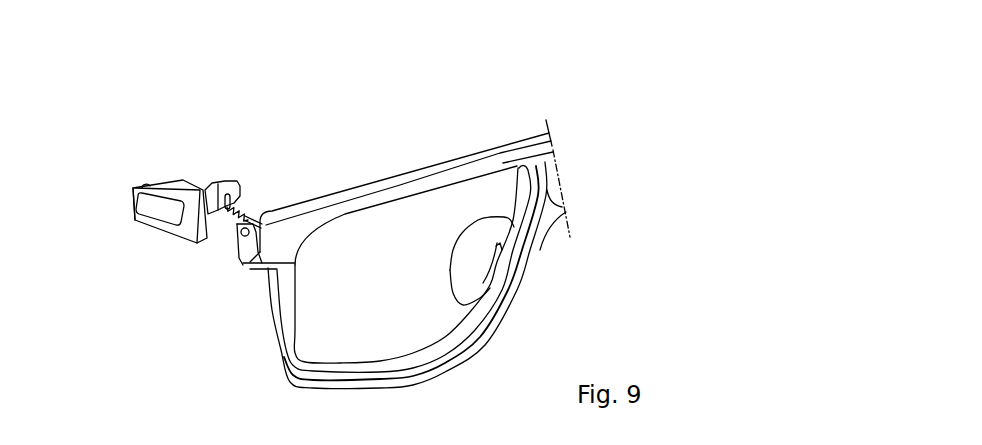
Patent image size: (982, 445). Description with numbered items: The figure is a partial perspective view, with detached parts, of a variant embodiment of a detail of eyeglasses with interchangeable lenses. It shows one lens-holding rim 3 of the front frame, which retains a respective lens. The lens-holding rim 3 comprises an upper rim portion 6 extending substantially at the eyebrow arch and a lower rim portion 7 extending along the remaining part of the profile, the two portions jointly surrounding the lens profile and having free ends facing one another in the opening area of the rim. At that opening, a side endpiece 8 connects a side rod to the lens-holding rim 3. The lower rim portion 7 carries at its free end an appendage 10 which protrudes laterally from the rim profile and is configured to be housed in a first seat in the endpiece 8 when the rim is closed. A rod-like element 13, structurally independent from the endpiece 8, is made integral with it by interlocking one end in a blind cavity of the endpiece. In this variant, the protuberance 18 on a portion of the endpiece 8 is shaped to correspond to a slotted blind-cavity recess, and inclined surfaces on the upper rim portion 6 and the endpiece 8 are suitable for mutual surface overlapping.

The lens-holding rim 3 is at (473, 148).
The upper rim portion 6 is at (320, 217).
The lower rim portion 7 is at (288, 350).
The side endpiece 8 is at (162, 227).
The appendage 10 is at (232, 251).
The rod-like element 13 is at (250, 204).
The protuberance 18 is at (208, 180).